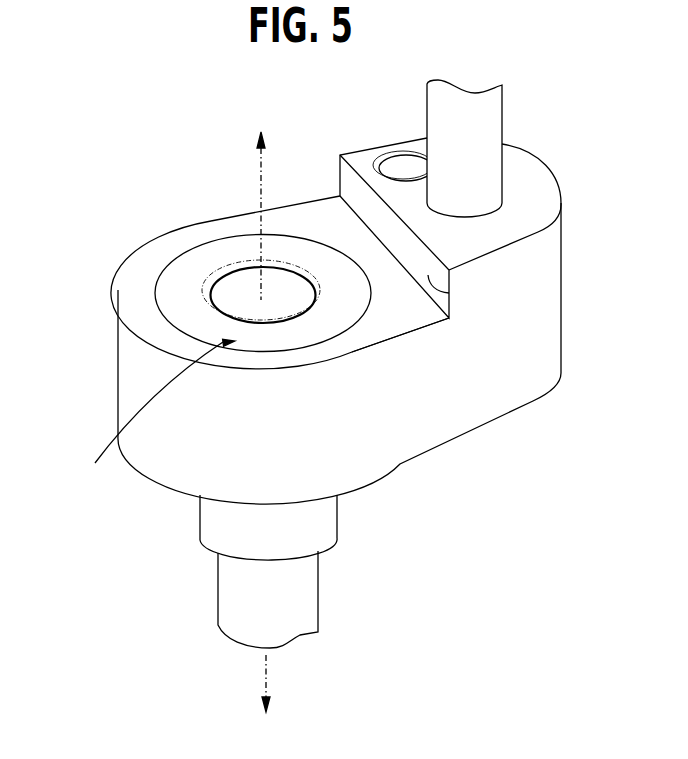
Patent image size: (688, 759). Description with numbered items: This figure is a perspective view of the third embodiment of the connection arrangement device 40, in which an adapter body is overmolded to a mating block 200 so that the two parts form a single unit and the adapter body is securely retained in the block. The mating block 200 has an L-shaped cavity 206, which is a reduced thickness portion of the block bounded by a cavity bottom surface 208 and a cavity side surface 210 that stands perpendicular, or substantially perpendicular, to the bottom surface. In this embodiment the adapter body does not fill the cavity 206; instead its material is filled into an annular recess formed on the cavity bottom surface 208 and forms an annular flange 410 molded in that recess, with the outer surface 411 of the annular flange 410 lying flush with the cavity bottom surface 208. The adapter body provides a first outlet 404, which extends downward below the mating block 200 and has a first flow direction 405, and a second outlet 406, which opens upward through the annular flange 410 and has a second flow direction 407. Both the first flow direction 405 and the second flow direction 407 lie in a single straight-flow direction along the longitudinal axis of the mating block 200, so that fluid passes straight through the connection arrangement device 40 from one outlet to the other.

The connection arrangement device 40 is at (92, 180).
The mating block 200 is at (546, 335).
The cavity 206 is at (324, 207).
The cavity bottom surface 208 is at (392, 325).
The cavity side surface 210 is at (450, 292).
The first outlet 404 is at (228, 541).
The first flow direction 405 is at (266, 673).
The second outlet 406 is at (230, 286).
The second flow direction 407 is at (259, 186).
The annular flange 410 is at (181, 303).
The outer surface 411 is at (147, 410).